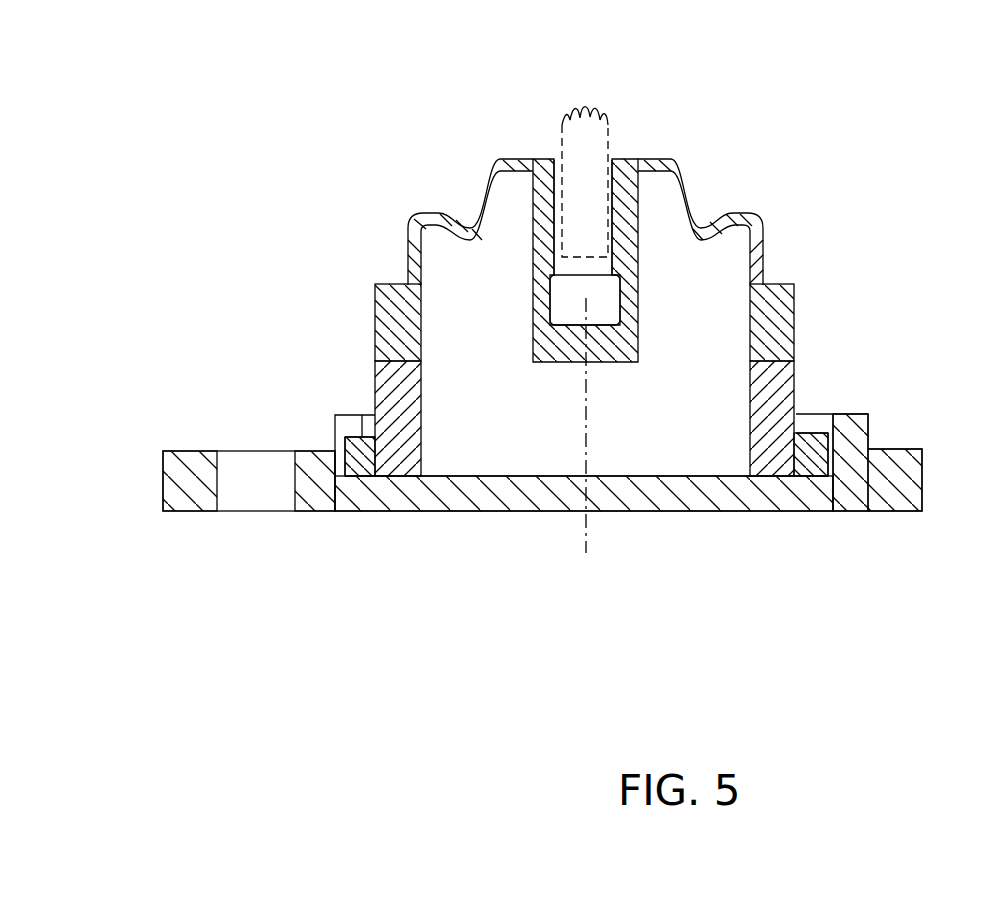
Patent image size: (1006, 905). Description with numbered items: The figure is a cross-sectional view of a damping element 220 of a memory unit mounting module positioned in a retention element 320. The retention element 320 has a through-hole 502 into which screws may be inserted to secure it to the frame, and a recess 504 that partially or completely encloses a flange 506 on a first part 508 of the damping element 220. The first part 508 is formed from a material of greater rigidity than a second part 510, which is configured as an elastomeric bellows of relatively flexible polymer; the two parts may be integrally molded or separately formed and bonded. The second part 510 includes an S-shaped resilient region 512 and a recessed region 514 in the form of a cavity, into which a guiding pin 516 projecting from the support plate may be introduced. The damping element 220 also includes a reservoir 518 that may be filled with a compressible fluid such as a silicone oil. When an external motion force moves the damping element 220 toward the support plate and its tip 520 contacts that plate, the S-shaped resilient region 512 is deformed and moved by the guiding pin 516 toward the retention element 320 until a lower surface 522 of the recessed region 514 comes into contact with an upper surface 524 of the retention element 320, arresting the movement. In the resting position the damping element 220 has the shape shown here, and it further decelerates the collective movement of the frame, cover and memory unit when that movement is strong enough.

The damping element 220 is at (455, 267).
The retention element 320 is at (872, 495).
The through-hole 502 is at (263, 495).
The recess 504 is at (355, 428).
The flange 506 is at (360, 458).
The first part 508 is at (375, 382).
The second part 510 is at (400, 315).
The S-shaped resilient region 512 is at (495, 197).
The recessed region 514 is at (608, 262).
The guiding pin 516 is at (585, 163).
The reservoir 518 is at (520, 433).
The tip 520 is at (527, 157).
The lower surface 522 is at (605, 358).
The upper surface 524 is at (470, 477).